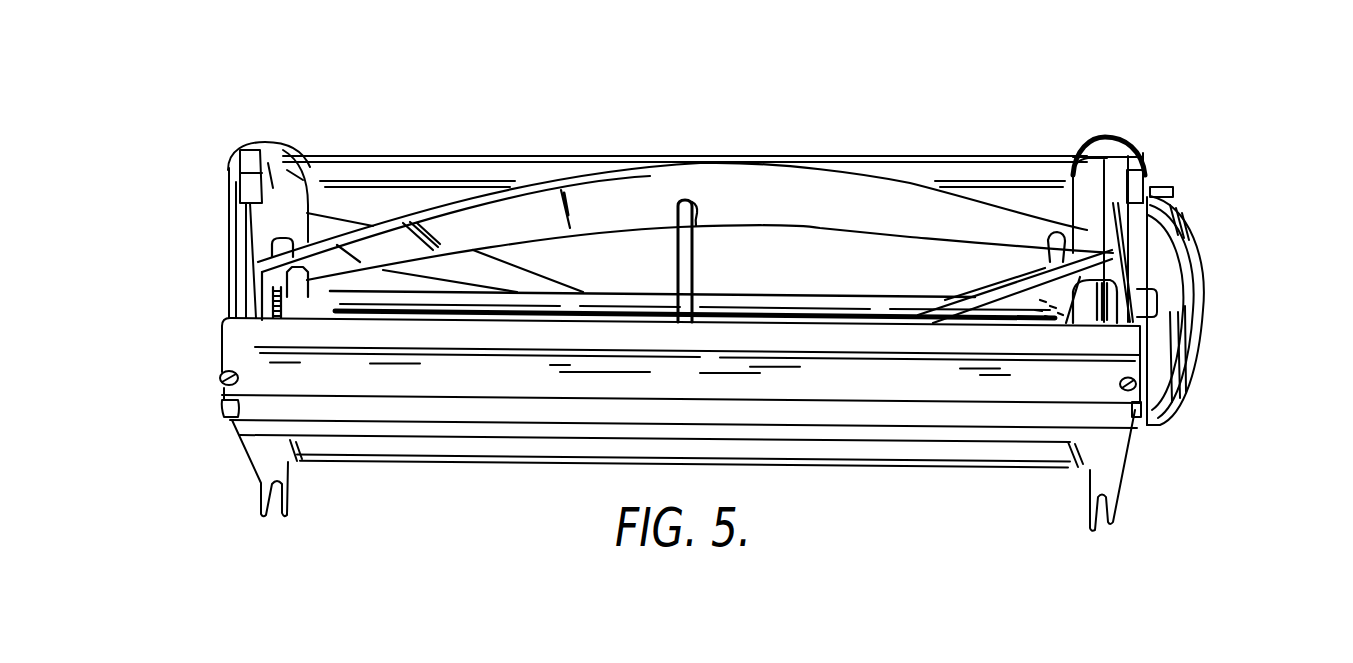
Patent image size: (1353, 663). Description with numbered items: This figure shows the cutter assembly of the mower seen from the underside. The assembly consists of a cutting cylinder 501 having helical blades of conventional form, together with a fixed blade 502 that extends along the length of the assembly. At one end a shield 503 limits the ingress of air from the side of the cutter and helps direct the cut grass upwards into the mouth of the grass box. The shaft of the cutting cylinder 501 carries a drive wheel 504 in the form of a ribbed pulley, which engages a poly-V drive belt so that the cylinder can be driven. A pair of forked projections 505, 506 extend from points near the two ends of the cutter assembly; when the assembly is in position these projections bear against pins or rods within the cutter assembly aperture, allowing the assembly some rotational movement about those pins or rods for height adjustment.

The cutting cylinder 501 is at (583, 198).
The fixed blade 502 is at (283, 334).
The shield 503 is at (1042, 172).
The drive wheel 504 is at (1180, 247).
The forked projection 505 is at (1118, 512).
The forked projection 506 is at (284, 515).